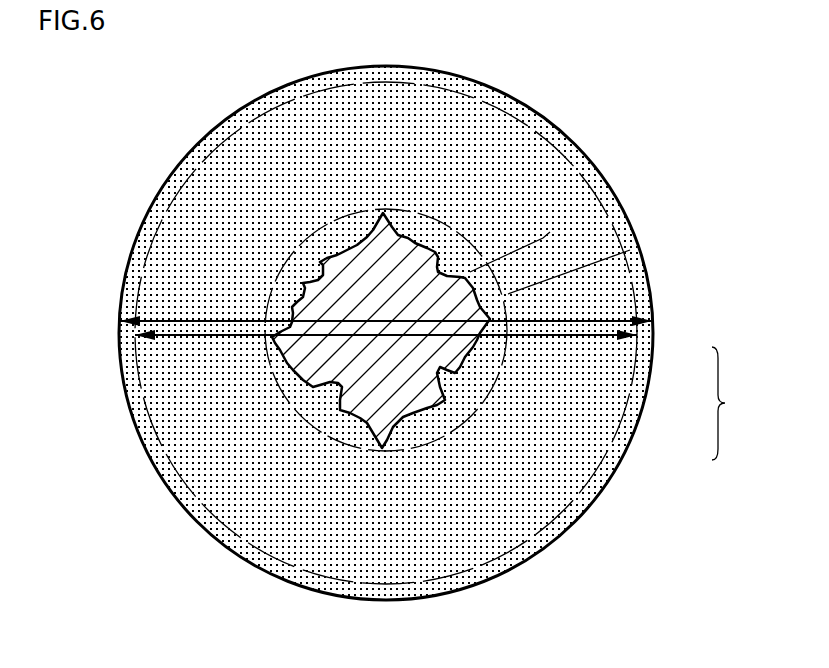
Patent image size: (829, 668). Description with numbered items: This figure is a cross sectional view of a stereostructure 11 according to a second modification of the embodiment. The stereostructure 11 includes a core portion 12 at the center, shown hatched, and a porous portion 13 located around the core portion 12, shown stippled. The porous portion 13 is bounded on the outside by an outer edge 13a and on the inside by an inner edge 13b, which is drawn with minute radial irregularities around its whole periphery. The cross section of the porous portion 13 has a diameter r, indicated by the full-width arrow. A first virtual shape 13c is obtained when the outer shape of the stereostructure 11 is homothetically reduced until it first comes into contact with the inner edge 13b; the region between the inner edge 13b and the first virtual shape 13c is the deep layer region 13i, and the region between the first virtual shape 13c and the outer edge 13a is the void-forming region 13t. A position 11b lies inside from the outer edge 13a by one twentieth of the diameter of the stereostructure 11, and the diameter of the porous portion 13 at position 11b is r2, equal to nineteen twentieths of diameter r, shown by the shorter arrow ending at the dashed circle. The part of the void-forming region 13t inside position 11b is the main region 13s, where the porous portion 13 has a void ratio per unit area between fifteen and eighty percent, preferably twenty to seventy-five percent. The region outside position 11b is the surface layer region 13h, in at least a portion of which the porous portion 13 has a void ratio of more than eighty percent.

The stereostructure 11 is at (733, 403).
The position 11b is at (330, 578).
The core portion 12 is at (415, 400).
The porous portion 13 is at (652, 361).
The outer edge 13a is at (221, 116).
The inner edge 13b is at (288, 300).
The first virtual shape 13c is at (273, 443).
The deep layer region 13i is at (470, 273).
The void-forming region 13t is at (550, 232).
The main region 13s is at (561, 273).
The surface layer region 13h is at (630, 250).
The diameter r is at (178, 320).
The diameter at position 11b r2 is at (187, 337).